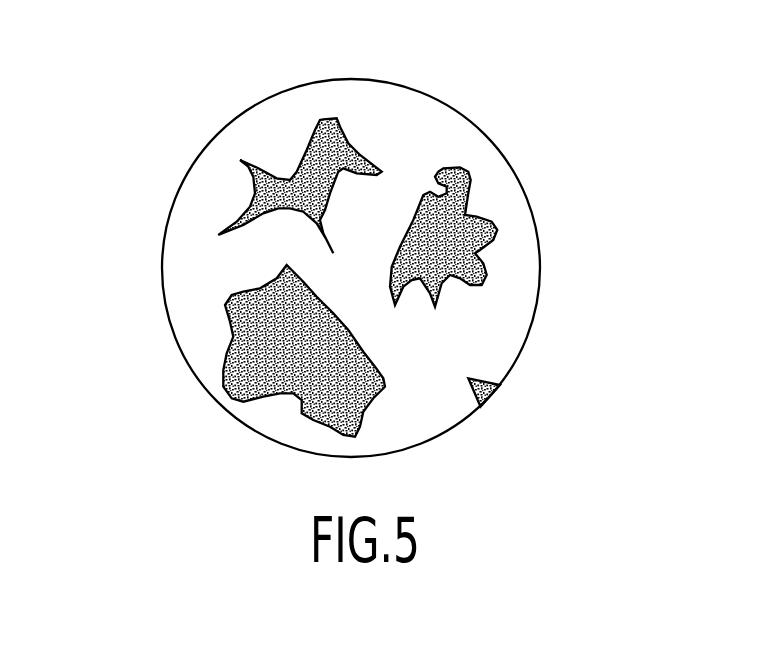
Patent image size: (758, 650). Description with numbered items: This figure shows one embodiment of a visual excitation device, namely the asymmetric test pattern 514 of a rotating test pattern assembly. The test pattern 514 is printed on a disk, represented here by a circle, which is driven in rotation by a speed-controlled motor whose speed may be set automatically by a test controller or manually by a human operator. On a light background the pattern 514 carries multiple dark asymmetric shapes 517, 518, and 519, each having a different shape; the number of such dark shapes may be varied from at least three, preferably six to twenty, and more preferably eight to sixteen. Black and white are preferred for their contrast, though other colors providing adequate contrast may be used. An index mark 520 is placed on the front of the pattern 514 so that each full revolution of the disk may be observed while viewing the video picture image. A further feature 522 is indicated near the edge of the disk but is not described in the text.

The test pattern 514 is at (590, 220).
The dark asymmetric shape 517 is at (230, 330).
The dark asymmetric shape 518 is at (320, 126).
The dark asymmetric shape 519 is at (470, 181).
The index mark 520 is at (500, 387).
The binder / backing surface 522 is at (498, 330).